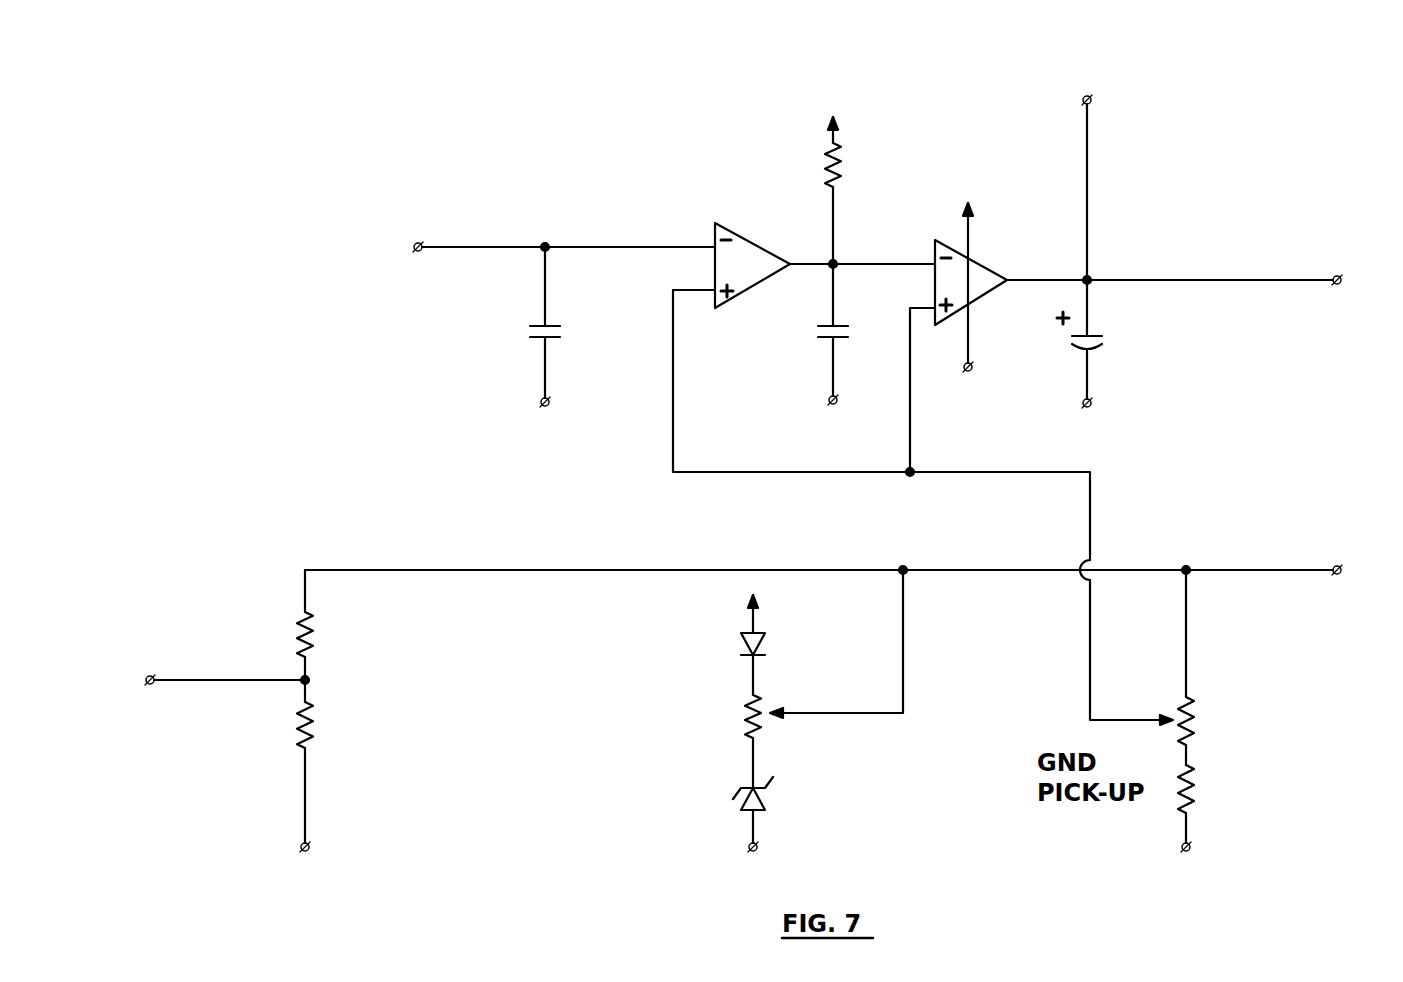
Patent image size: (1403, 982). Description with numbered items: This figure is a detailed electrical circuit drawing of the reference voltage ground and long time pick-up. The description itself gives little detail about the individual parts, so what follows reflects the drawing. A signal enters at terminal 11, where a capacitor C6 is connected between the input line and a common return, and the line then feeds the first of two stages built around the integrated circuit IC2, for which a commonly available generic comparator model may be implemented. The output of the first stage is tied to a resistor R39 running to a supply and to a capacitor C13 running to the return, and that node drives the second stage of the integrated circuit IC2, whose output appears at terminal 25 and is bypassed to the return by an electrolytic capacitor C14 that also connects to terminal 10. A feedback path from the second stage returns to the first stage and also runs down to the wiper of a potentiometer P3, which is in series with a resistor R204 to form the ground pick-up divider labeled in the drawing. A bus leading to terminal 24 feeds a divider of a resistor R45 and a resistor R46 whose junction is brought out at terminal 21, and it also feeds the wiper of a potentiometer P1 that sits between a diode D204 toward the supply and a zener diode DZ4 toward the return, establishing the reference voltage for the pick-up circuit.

The input terminal 11 is at (400, 248).
The output terminal 25 is at (1356, 282).
The terminal 24 is at (1356, 572).
The terminal 21 is at (209, 682).
The supply terminal 10 is at (1086, 173).
The capacitor C6 0.01uF C6 is at (594, 342).
The integrated circuit IC2 is at (854, 288).
The resistor R39 100K R39 is at (789, 175).
The capacitor C13 0.22uF C13 is at (780, 350).
The electrolytic capacitor C14 2.2uF C14 is at (1125, 359).
The resistor R45 10K R45 is at (352, 636).
The resistor R46 100K R46 is at (356, 792).
The diode D204 is at (722, 635).
The potentiometer P1 20K P1 is at (793, 732).
The zener diode DZ4 is at (782, 831).
The ground pick-up potentiometer P3 20K P3 is at (1228, 667).
The resistor R204 80K R204 is at (1229, 824).